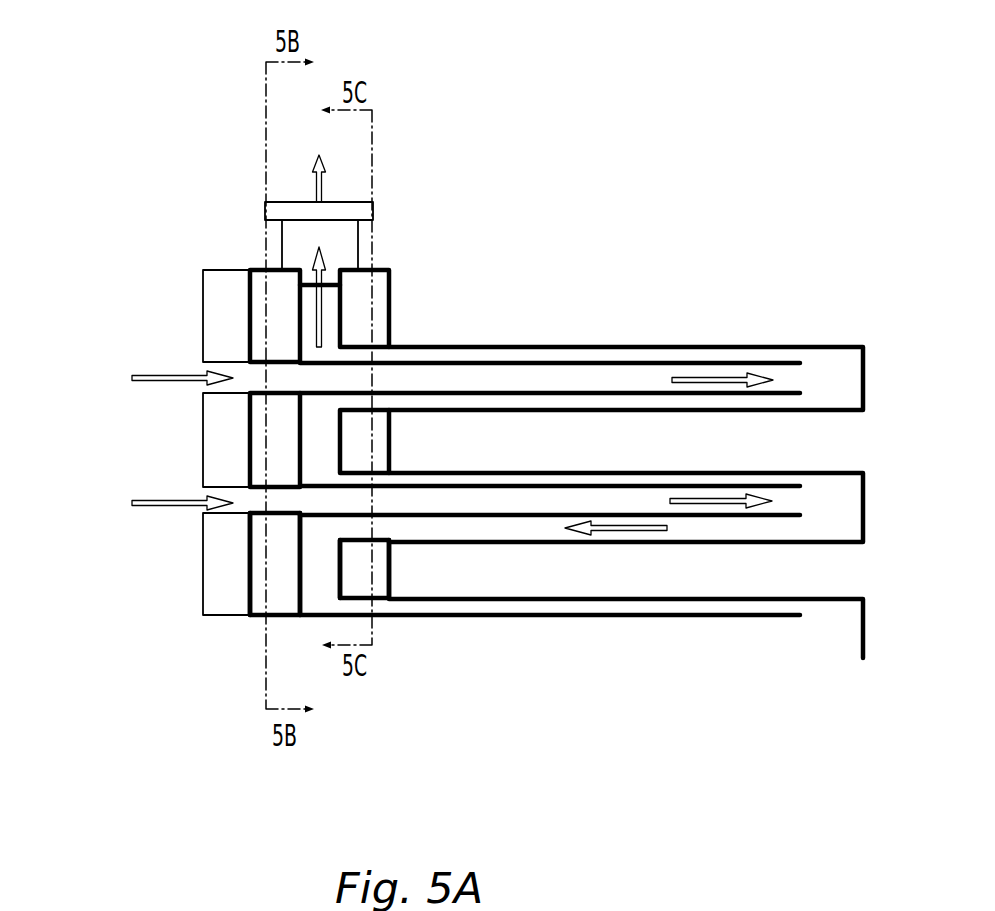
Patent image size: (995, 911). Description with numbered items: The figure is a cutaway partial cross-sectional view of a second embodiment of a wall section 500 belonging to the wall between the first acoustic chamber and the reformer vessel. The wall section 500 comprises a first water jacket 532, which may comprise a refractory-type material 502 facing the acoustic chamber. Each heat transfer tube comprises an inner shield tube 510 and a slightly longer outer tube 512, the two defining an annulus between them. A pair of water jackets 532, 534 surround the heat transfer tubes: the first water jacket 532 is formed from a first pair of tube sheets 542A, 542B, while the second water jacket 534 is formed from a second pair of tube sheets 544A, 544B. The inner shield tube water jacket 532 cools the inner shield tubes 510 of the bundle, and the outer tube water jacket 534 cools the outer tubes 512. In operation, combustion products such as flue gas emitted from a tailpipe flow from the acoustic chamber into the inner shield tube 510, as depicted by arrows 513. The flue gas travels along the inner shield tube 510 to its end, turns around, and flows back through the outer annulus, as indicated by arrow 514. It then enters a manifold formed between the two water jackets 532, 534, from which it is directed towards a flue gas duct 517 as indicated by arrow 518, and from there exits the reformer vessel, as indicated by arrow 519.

The wall section 500 is at (85, 53).
The refractory-type material 502 is at (220, 318).
The inner shield tube 510 is at (697, 364).
The outer tube 512 is at (636, 347).
The arrows 513 is at (153, 375).
The arrow 514 is at (688, 498).
The flue gas duct 517 is at (345, 240).
The arrow 518 is at (311, 268).
The arrow 519 is at (322, 180).
The first water jacket 532 is at (260, 290).
The second water jacket 534 is at (360, 575).
The tube sheet 542A is at (248, 587).
The tube sheet 542B is at (293, 590).
The tube sheet 544A is at (345, 580).
The tube sheet 544B is at (360, 573).